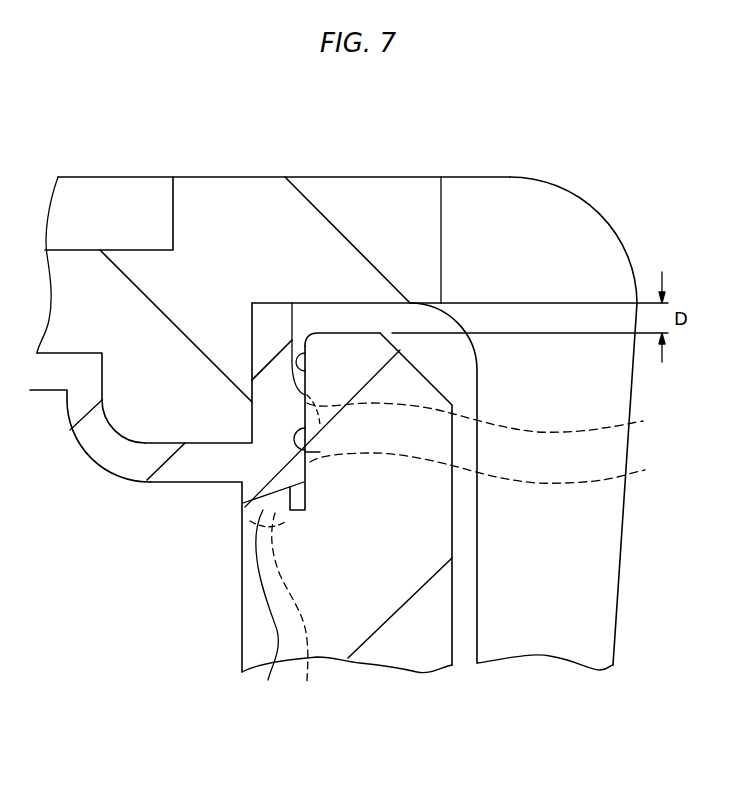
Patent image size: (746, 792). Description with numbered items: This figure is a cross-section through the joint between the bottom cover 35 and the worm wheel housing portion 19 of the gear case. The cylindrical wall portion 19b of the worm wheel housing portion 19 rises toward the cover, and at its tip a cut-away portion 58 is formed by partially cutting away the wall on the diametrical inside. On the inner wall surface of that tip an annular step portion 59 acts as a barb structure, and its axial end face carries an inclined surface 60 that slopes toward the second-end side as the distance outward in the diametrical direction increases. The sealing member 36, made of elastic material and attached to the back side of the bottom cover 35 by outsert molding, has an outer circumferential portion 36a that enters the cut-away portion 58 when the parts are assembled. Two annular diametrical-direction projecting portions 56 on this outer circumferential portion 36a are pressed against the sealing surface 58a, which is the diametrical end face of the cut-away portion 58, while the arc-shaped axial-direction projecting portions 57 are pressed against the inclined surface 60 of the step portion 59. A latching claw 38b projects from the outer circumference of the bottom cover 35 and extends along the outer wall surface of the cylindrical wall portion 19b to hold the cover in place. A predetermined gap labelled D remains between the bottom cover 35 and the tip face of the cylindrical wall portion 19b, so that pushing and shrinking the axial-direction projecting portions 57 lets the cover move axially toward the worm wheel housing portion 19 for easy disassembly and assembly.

The bottom cover 35 is at (115, 176).
The sealing member 36 is at (107, 445).
The outer circumferential portion of the sealing member 36a is at (265, 462).
The inclined surface 60 is at (246, 490).
The cut-away portion 58 is at (299, 347).
The sealing surface 58a is at (300, 360).
The diametrical-direction projecting portion 56 is at (490, 443).
The latching claw 38b is at (553, 573).
The step portion 59 is at (268, 608).
The axial-direction projecting portion 57 is at (283, 609).
The cylindrical wall portion 19b is at (390, 650).
The worm wheel housing portion 19 is at (421, 676).